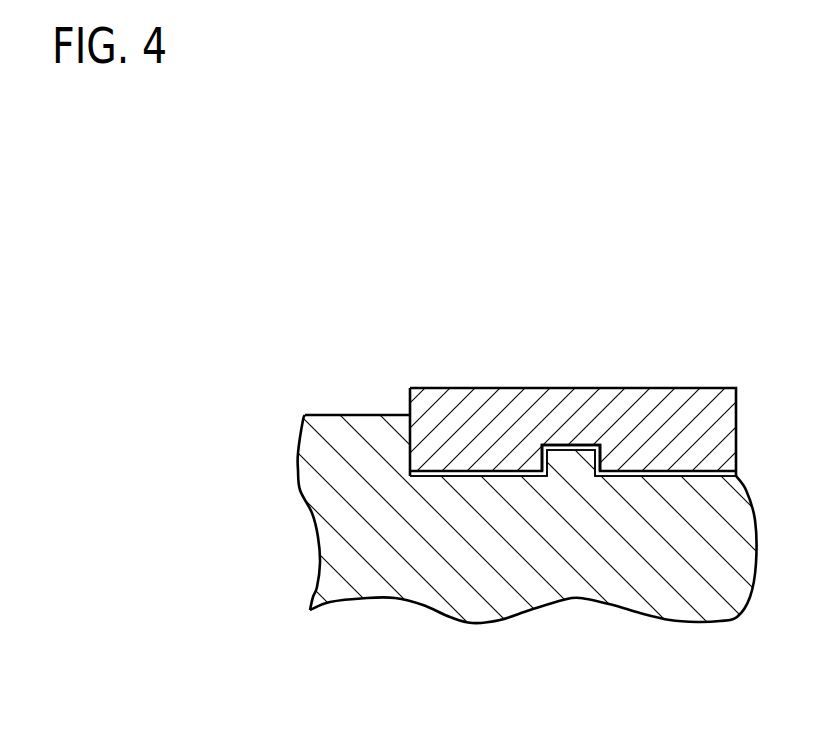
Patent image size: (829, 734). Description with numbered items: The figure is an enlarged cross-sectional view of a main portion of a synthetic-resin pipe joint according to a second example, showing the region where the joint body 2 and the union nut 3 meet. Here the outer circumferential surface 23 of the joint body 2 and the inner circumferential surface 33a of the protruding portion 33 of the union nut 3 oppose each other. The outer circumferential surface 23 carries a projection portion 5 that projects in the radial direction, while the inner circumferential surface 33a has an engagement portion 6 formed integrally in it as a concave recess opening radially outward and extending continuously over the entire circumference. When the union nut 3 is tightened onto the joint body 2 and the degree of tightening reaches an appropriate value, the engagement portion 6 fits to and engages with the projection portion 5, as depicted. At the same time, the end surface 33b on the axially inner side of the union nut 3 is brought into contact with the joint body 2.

The joint body 2 is at (437, 495).
The union nut 3 is at (437, 484).
The projection portion 5 is at (574, 460).
The engagement portion 6 is at (545, 450).
The outer circumferential surface 23 is at (622, 475).
The protruding portion 33 is at (581, 398).
The inner circumferential surface 33a is at (672, 470).
The end surface 33b is at (408, 402).